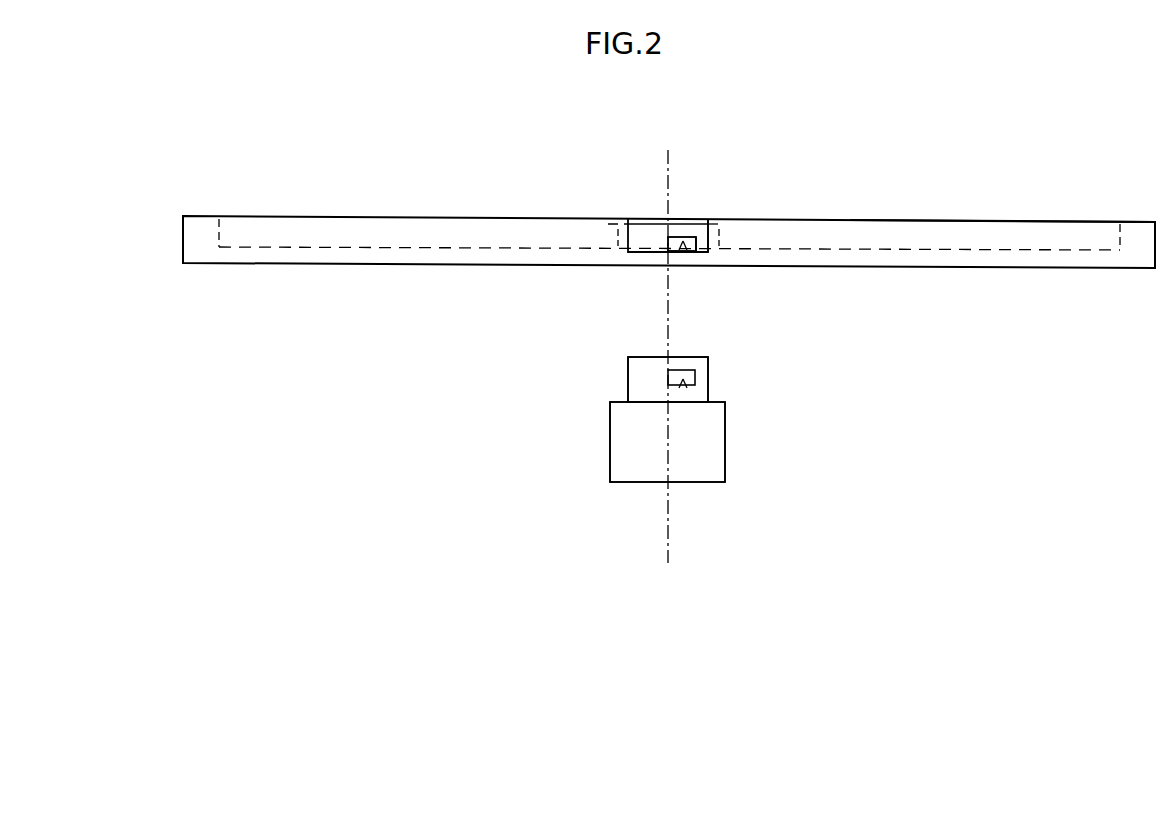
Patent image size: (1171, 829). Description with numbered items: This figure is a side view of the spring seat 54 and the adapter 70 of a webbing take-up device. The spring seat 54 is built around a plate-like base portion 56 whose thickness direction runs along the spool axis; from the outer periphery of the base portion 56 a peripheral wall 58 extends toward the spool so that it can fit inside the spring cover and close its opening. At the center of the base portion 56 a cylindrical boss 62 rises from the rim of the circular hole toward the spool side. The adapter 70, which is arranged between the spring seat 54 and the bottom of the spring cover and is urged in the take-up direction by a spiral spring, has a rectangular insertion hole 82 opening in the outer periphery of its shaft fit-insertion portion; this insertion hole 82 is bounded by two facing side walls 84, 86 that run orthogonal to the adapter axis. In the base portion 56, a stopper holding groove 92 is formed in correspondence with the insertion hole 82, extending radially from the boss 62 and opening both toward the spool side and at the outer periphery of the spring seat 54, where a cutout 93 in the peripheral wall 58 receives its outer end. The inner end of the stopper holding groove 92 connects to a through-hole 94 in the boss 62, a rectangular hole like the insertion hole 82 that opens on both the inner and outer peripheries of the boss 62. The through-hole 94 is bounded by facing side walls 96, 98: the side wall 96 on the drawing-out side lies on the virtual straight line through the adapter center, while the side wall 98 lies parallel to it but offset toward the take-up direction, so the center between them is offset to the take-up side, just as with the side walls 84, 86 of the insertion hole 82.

The spring seat 54 is at (272, 200).
The base portion 56 is at (866, 249).
The peripheral wall 58 is at (932, 219).
The boss 62 is at (692, 237).
The adapter 70 is at (563, 472).
The insertion hole 82 is at (683, 380).
The side wall 84 is at (674, 375).
The side wall 86 is at (694, 371).
The stopper holding groove 92 is at (646, 252).
The cutout 93 is at (633, 240).
The through-hole 94 is at (683, 242).
The side wall 96 is at (677, 237).
The side wall 98 is at (704, 236).